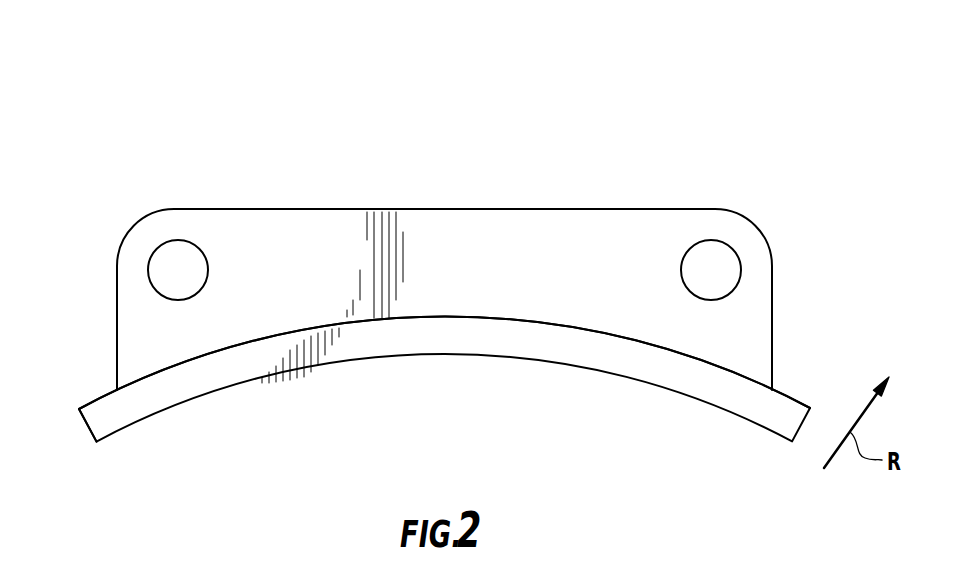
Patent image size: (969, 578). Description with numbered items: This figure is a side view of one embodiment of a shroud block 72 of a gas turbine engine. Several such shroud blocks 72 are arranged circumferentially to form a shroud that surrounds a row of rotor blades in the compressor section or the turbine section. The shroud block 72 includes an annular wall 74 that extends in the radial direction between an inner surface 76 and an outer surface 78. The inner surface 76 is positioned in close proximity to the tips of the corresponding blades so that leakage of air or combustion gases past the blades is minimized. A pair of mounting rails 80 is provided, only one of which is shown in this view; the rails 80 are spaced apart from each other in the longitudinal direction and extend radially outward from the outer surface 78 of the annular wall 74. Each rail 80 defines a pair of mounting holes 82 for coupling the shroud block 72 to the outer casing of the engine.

The shroud block 72 is at (133, 74).
The annular wall 74 is at (84, 435).
The inner surface 76 is at (163, 415).
The outer surface 78 is at (100, 396).
The mounting rail 80 is at (469, 208).
The mounting hole 82 is at (177, 254).